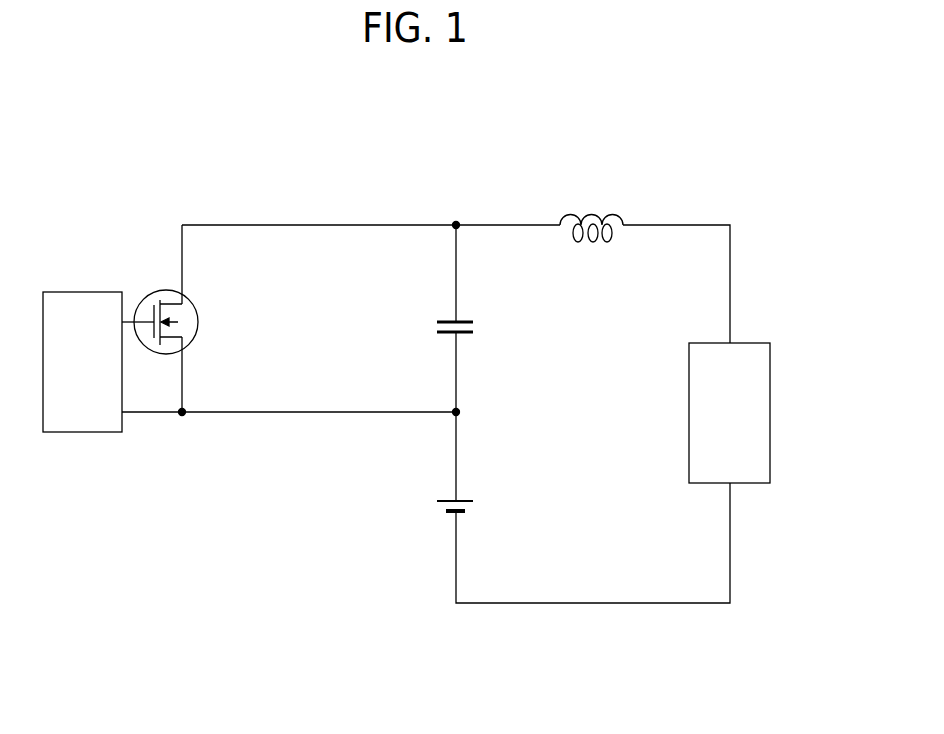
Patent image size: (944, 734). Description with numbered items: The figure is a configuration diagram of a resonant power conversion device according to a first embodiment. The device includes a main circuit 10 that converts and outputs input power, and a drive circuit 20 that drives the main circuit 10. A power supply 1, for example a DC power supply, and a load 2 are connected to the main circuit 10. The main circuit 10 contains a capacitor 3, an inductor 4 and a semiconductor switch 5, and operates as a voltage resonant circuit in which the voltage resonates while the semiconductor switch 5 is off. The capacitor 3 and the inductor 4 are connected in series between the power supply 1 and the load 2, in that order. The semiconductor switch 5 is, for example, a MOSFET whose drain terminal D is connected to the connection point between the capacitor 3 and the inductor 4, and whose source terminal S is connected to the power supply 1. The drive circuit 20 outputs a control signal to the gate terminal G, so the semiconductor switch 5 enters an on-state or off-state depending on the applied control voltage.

The main circuit 10 is at (494, 163).
The drive circuit 20 is at (78, 292).
The semiconductor switch 5 is at (198, 321).
The capacitor 3 is at (478, 327).
The power supply 1 is at (474, 506).
The inductor 4 is at (588, 205).
The load 2 is at (771, 405).